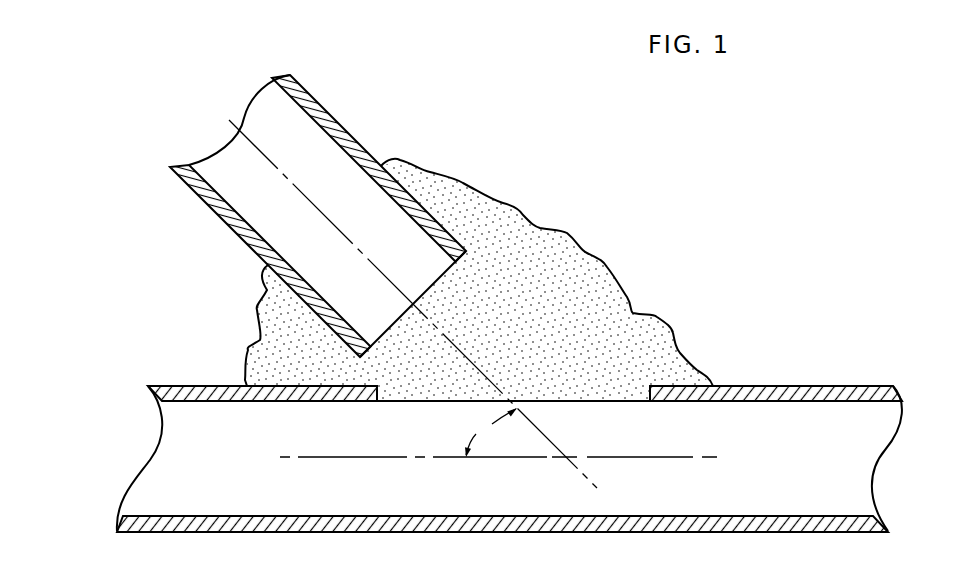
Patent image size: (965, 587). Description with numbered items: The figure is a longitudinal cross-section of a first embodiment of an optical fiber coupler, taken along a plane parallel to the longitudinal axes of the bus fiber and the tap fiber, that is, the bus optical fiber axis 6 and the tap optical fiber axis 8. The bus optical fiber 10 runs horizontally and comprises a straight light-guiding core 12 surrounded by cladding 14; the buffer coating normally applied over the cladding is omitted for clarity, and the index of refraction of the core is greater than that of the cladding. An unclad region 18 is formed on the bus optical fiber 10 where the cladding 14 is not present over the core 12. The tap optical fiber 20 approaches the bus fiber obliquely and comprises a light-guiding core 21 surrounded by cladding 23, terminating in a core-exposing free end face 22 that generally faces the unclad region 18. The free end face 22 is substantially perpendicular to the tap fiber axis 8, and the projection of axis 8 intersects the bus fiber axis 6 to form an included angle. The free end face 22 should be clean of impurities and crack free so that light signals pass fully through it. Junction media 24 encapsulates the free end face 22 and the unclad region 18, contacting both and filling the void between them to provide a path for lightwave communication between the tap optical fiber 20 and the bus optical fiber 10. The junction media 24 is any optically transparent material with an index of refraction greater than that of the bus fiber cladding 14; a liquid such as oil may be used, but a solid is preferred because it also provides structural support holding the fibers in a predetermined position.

The bus optical fiber 10 is at (863, 364).
The core 12 is at (793, 499).
The cladding 14 is at (327, 390).
The unclad region 18 is at (452, 401).
The bus optical fiber axis 6 is at (353, 458).
The tap optical fiber 20 is at (356, 103).
The core 21 is at (378, 222).
The free end face 22 is at (450, 272).
The cladding 23 is at (221, 218).
The junction media 24 is at (495, 225).
The tap optical fiber axis 8 is at (381, 270).